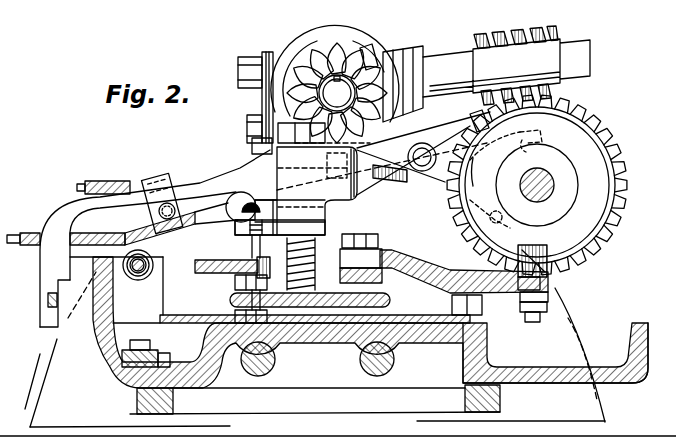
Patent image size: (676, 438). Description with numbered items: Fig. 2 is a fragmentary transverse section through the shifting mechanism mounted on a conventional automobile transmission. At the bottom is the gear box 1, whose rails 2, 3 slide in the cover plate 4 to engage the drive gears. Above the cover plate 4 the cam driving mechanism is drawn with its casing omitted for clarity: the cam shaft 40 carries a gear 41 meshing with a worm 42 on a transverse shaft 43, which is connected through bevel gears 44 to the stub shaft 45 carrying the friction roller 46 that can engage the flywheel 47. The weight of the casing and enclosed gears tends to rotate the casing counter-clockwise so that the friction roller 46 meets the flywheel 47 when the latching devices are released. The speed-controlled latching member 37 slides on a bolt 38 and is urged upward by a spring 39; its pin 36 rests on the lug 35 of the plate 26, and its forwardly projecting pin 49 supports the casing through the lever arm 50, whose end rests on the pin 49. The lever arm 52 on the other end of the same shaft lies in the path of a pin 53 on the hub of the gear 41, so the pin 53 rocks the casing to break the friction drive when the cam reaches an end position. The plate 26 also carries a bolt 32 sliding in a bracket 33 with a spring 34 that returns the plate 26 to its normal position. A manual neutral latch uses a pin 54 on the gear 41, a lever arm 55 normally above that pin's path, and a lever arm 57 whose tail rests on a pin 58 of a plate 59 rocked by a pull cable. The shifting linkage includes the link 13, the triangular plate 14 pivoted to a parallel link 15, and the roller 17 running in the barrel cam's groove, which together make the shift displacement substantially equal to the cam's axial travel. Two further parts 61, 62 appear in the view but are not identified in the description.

The gear box 1 is at (137, 404).
The rail 2 is at (394, 360).
The rail 3 is at (275, 360).
The cover plate 4 is at (463, 360).
The link 13 is at (372, 276).
The triangular plate 14 is at (440, 268).
The parallel link 15 is at (403, 307).
The roller 17 is at (548, 266).
The plate 26 is at (215, 274).
The bolt 32 is at (138, 281).
The bracket 33 is at (108, 362).
The spring 34 is at (155, 268).
The lug 35 is at (262, 268).
The pin 36 is at (236, 236).
The latching member 37 is at (342, 213).
The bolt 38 is at (262, 138).
The spring 39 is at (315, 266).
The cam shaft 40 is at (550, 192).
The gear 41 is at (598, 122).
The worm 42 is at (548, 30).
The transverse shaft 43 is at (591, 61).
The bevel gears 44 is at (372, 55).
The stub shaft 45 is at (325, 96).
The friction roller 46 is at (311, 37).
The flywheel 47 is at (437, 196).
The pin 49 is at (330, 178).
The lever arm 50 is at (421, 145).
The lever arm 52 is at (540, 136).
The pin 53 is at (524, 148).
The pin 54 is at (505, 226).
The lever arm 55 is at (472, 128).
The lever arm 57 is at (390, 185).
The pin 58 is at (278, 216).
The plate 59 is at (226, 236).
The clamp 61 is at (160, 188).
The clamp 62 is at (48, 298).